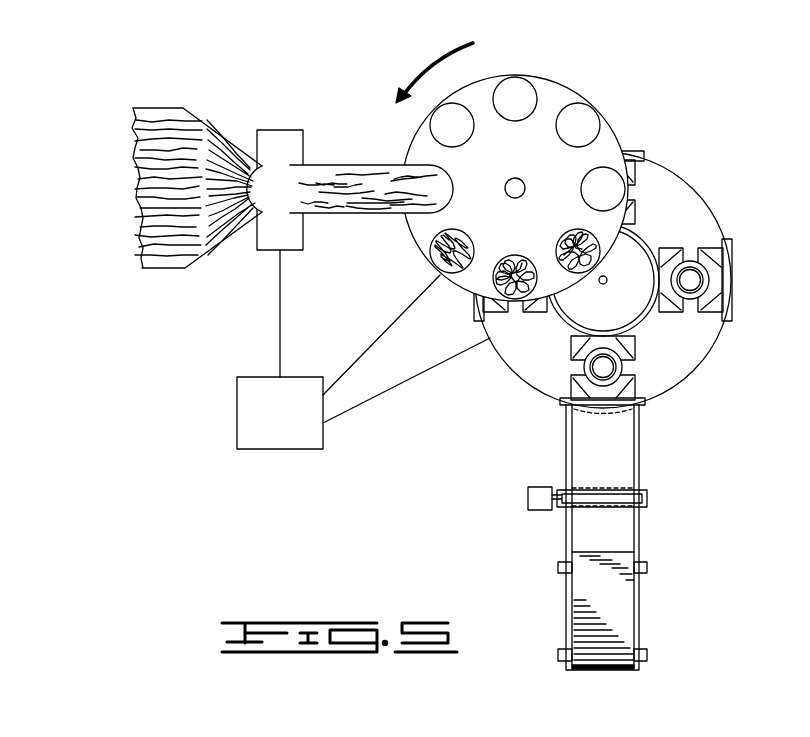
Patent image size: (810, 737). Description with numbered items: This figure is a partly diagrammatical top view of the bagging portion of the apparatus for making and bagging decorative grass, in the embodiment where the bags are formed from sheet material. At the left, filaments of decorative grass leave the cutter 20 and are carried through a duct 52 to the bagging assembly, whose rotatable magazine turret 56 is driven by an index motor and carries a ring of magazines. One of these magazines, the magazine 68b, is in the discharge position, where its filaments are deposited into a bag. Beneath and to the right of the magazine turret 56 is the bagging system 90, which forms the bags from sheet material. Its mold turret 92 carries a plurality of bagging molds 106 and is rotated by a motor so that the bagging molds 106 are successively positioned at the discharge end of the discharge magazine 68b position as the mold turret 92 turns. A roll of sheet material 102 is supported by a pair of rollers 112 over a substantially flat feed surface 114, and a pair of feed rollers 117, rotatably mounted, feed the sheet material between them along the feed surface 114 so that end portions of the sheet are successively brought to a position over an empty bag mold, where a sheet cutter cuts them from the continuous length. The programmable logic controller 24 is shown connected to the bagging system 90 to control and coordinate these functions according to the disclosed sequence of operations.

The cutter 20 is at (175, 106).
The programmable logic controller (PLC) 24 is at (243, 387).
The duct 52 is at (367, 163).
The rotatable magazine turret 56 is at (568, 79).
The magazine 68b is at (605, 168).
The bagging system 90 is at (712, 165).
The mold turret 92 is at (712, 195).
The bagging molds 106 is at (700, 267).
The feed surface 114 is at (639, 438).
The feed rollers 117 is at (580, 503).
The rollers 112 is at (647, 565).
The roll of sheet material 102 is at (605, 608).